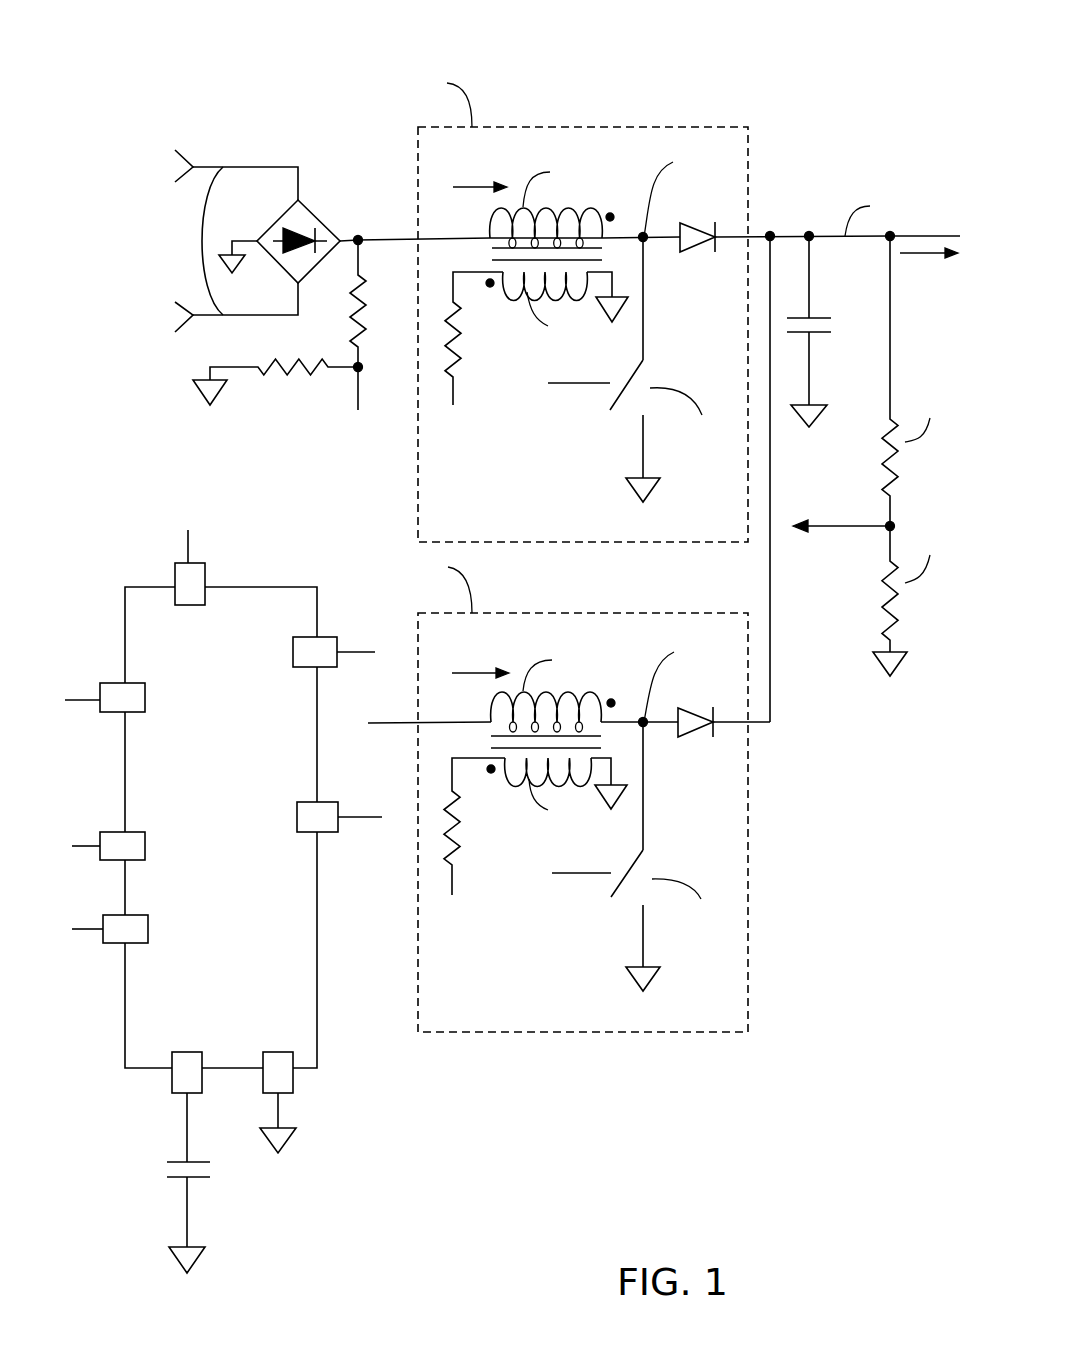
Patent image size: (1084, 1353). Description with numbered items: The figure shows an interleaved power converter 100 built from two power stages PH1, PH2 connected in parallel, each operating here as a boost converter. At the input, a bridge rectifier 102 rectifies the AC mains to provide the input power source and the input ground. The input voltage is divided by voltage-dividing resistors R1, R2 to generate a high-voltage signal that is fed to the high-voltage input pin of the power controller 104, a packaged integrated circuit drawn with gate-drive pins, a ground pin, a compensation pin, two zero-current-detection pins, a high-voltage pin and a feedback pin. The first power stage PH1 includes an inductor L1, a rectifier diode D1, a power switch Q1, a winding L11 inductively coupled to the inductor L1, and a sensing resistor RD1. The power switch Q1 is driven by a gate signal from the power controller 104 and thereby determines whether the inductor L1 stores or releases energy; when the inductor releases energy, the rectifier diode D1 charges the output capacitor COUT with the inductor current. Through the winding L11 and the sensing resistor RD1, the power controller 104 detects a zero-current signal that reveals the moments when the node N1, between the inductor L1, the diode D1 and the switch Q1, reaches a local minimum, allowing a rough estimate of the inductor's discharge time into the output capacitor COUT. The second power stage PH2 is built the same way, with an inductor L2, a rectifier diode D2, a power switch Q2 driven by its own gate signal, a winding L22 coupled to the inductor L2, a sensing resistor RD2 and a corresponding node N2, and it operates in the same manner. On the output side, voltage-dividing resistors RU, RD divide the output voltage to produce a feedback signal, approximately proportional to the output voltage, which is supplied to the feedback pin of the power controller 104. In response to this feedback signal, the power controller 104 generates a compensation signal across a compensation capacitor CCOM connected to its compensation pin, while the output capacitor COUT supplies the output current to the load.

The interleaved power converter 100 is at (318, 78).
The bridge rectifier 102 is at (310, 208).
The power controller 104 is at (235, 748).
The power stage PH1 is at (579, 304).
The power stage PH2 is at (569, 792).
The inductor L1 is at (552, 205).
The winding L11 is at (536, 304).
The inductor L2 is at (553, 692).
The winding L22 is at (539, 789).
The power switch Q1 is at (639, 376).
The power switch Q2 is at (642, 863).
The rectifier diode D1 is at (697, 223).
The rectifier diode D2 is at (695, 708).
The node N1 is at (670, 191).
The node N2 is at (671, 677).
The voltage-dividing resistor R1 is at (338, 303).
The voltage-dividing resistor R2 is at (257, 372).
The sensing resistor RD1 is at (476, 338).
The sensing resistor RD2 is at (476, 826).
The voltage-dividing resistor RU is at (919, 381).
The voltage-dividing resistor RD is at (915, 601).
The output capacitor COUT is at (828, 331).
The compensation capacitor CCOM is at (152, 1183).